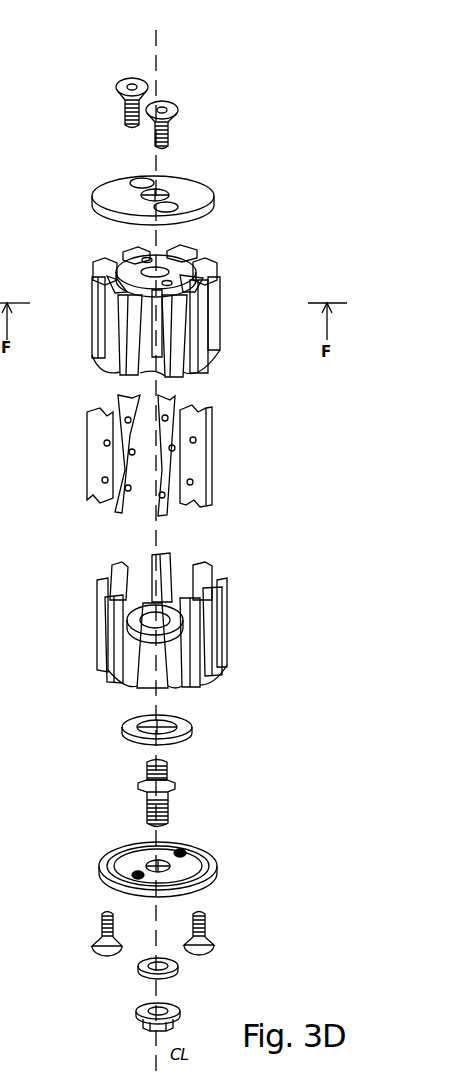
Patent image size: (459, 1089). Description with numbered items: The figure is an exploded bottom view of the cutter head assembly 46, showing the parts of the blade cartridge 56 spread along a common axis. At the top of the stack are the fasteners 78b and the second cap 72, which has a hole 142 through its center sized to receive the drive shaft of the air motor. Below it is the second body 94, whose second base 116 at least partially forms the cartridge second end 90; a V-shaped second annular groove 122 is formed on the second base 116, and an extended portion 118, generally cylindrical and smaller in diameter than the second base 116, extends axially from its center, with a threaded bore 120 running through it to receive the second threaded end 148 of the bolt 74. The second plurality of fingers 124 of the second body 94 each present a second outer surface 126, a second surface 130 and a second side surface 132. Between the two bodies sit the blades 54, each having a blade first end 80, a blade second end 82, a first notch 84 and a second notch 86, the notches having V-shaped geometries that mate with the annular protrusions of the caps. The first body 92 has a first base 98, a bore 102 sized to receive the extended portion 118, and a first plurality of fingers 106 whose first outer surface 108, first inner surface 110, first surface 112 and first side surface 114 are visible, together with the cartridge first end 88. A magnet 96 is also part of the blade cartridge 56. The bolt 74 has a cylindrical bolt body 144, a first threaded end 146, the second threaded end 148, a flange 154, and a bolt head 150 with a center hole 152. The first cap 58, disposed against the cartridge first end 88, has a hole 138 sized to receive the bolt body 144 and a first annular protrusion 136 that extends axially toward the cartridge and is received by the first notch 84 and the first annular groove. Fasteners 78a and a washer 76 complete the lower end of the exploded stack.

The cutter head assembly 46 is at (130, 102).
The screws 78b is at (150, 90).
The hole 142 is at (165, 190).
The second cap 72 is at (174, 181).
The second base 116 is at (128, 262).
The bore 120 is at (185, 250).
The second annular groove 122 is at (118, 262).
The cartridge second end 90 is at (154, 259).
The second outer surface 126 is at (217, 292).
The blade cartridge 56 is at (169, 306).
The second side surface 132 is at (198, 302).
The second body 94 is at (95, 300).
The second plurality of fingers 124 is at (98, 357).
The second surface 130 is at (217, 368).
The extended portion 118 is at (140, 373).
The second notch 86 is at (193, 405).
The blade second end 82 is at (207, 422).
The blades 54 is at (183, 455).
The blade first end 80 is at (202, 498).
The first notch 84 is at (193, 503).
The first inner surface 110 is at (140, 587).
The bore 102 is at (177, 617).
The first plurality of fingers 106 is at (115, 577).
The first body 92 is at (227, 608).
The first side surface 114 is at (208, 628).
The first outer surface 108 is at (110, 637).
The cartridge first end 88 is at (162, 618).
The first base 98 is at (132, 680).
The first surface 112 is at (185, 653).
The magnet 96 is at (192, 728).
The second threaded end 148 is at (167, 762).
The flange 154 is at (175, 785).
The cylindrical bolt body 144 is at (168, 798).
The first threaded end 146 is at (168, 817).
The bolt 74 is at (153, 789).
The hole 138 is at (152, 863).
The first annular protrusion 136 is at (207, 849).
The first cap 58 is at (163, 866).
The screws 78a is at (113, 925).
The washer 76 is at (178, 967).
The center hole 152 is at (147, 1010).
The bolt head 150 is at (158, 1015).